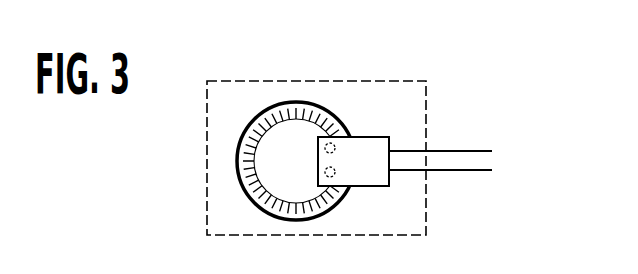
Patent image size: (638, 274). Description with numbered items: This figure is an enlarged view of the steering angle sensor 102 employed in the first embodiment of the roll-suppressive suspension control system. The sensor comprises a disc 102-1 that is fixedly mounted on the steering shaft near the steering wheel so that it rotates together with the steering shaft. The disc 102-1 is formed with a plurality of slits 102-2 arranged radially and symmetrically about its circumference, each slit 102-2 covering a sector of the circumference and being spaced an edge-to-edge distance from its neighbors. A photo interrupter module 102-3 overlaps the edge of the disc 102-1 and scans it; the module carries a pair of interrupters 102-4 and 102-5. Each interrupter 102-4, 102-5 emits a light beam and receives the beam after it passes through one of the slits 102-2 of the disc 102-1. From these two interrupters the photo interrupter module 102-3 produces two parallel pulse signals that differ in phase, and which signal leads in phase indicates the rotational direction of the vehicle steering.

The steering angle sensor 102 is at (325, 76).
The disc 102-1 is at (273, 181).
The slits 102-2 is at (257, 123).
The photo interrupter module 102-3 is at (390, 144).
The interrupter 102-4 is at (336, 148).
The interrupter 102-5 is at (335, 177).